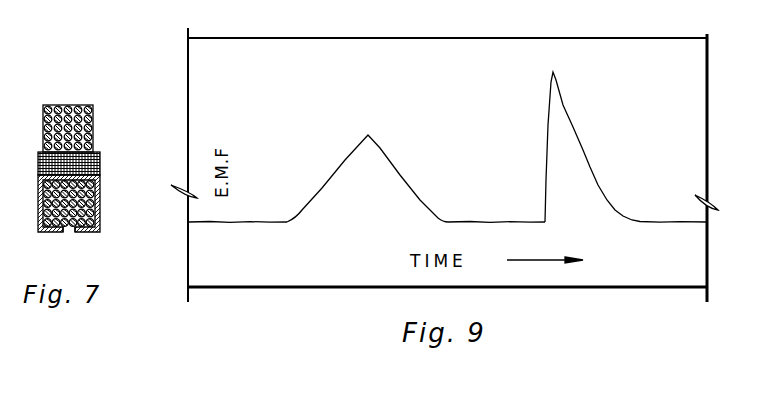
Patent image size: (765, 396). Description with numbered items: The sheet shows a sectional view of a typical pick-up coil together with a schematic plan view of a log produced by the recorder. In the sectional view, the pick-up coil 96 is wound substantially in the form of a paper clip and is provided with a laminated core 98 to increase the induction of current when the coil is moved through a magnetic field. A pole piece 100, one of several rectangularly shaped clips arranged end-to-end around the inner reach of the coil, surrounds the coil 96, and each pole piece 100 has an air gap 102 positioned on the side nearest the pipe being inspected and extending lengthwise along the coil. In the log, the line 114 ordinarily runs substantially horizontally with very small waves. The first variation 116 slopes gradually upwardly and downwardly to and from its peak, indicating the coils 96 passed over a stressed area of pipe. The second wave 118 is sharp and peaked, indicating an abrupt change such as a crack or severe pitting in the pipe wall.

In FIG. 7, the pick-up coil 96 is at (87, 87).
In FIG. 7, the laminated core 98 is at (100, 165).
In FIG. 7, the pole piece 100 is at (100, 194).
In FIG. 7, the air gap 102 is at (70, 233).
In FIG. 9, the line 114 is at (248, 222).
In FIG. 9, the first variation 116 is at (362, 141).
In FIG. 9, the second variation or wave 118 is at (549, 77).